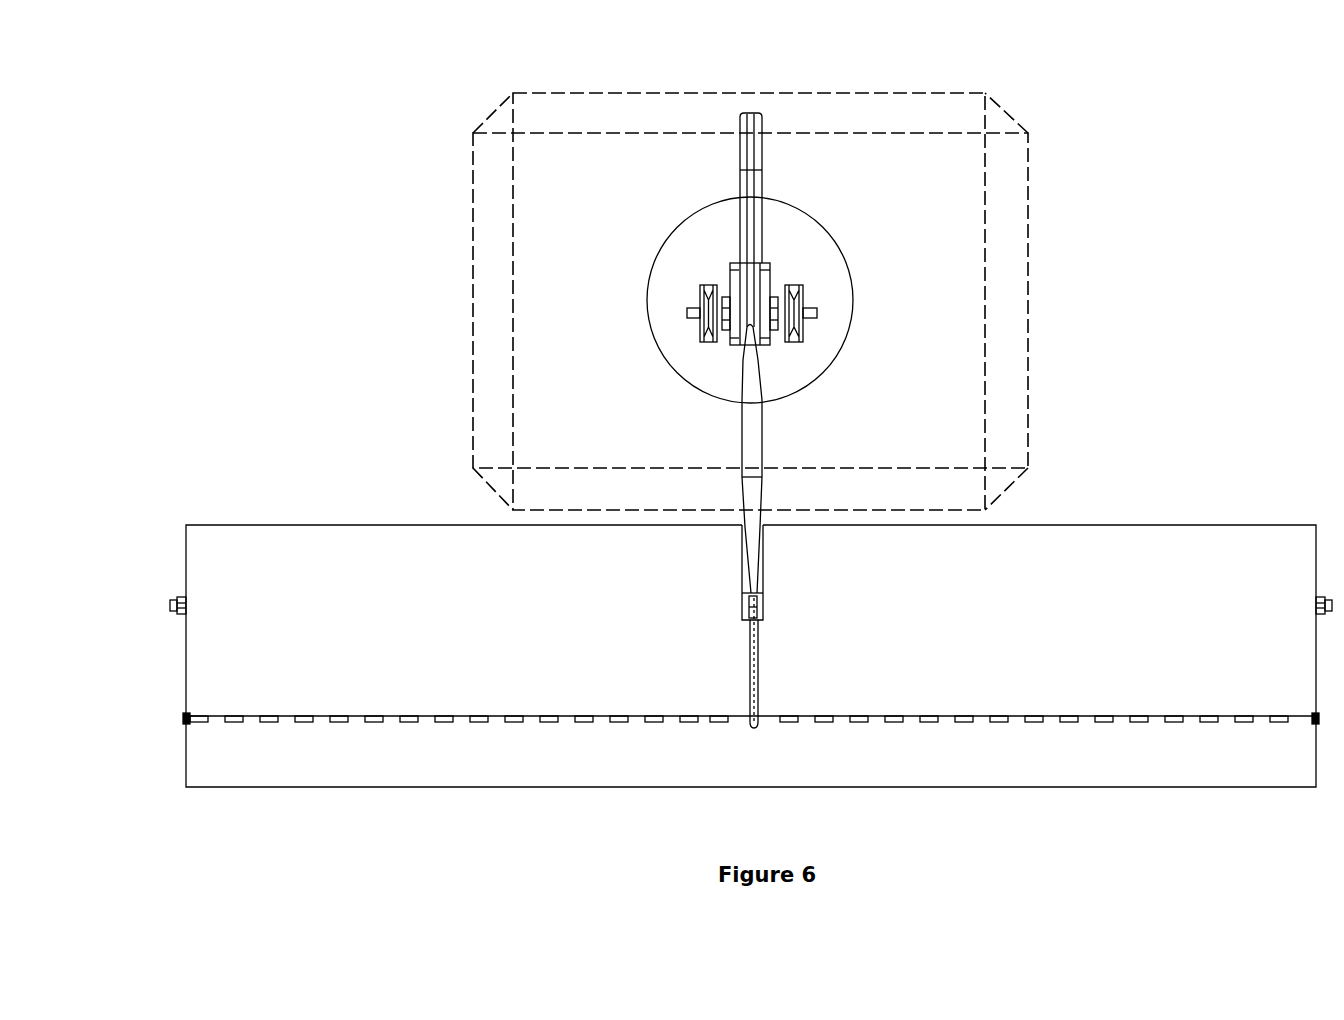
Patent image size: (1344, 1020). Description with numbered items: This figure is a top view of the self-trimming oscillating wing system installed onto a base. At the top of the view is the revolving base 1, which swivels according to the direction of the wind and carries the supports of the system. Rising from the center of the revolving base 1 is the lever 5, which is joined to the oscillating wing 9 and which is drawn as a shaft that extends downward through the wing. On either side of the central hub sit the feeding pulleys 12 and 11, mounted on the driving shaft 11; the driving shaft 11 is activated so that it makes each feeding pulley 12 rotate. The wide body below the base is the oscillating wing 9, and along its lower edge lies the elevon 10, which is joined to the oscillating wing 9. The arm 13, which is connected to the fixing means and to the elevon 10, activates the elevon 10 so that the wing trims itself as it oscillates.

The revolving base 1 is at (601, 228).
The lever 5 is at (914, 156).
The oscillating wing 9 is at (751, 527).
The elevon 10 is at (751, 793).
The driving shaft 11 is at (1020, 200).
The feeding pulley 12 is at (451, 197).
The arm activating the elevon 13 is at (966, 598).